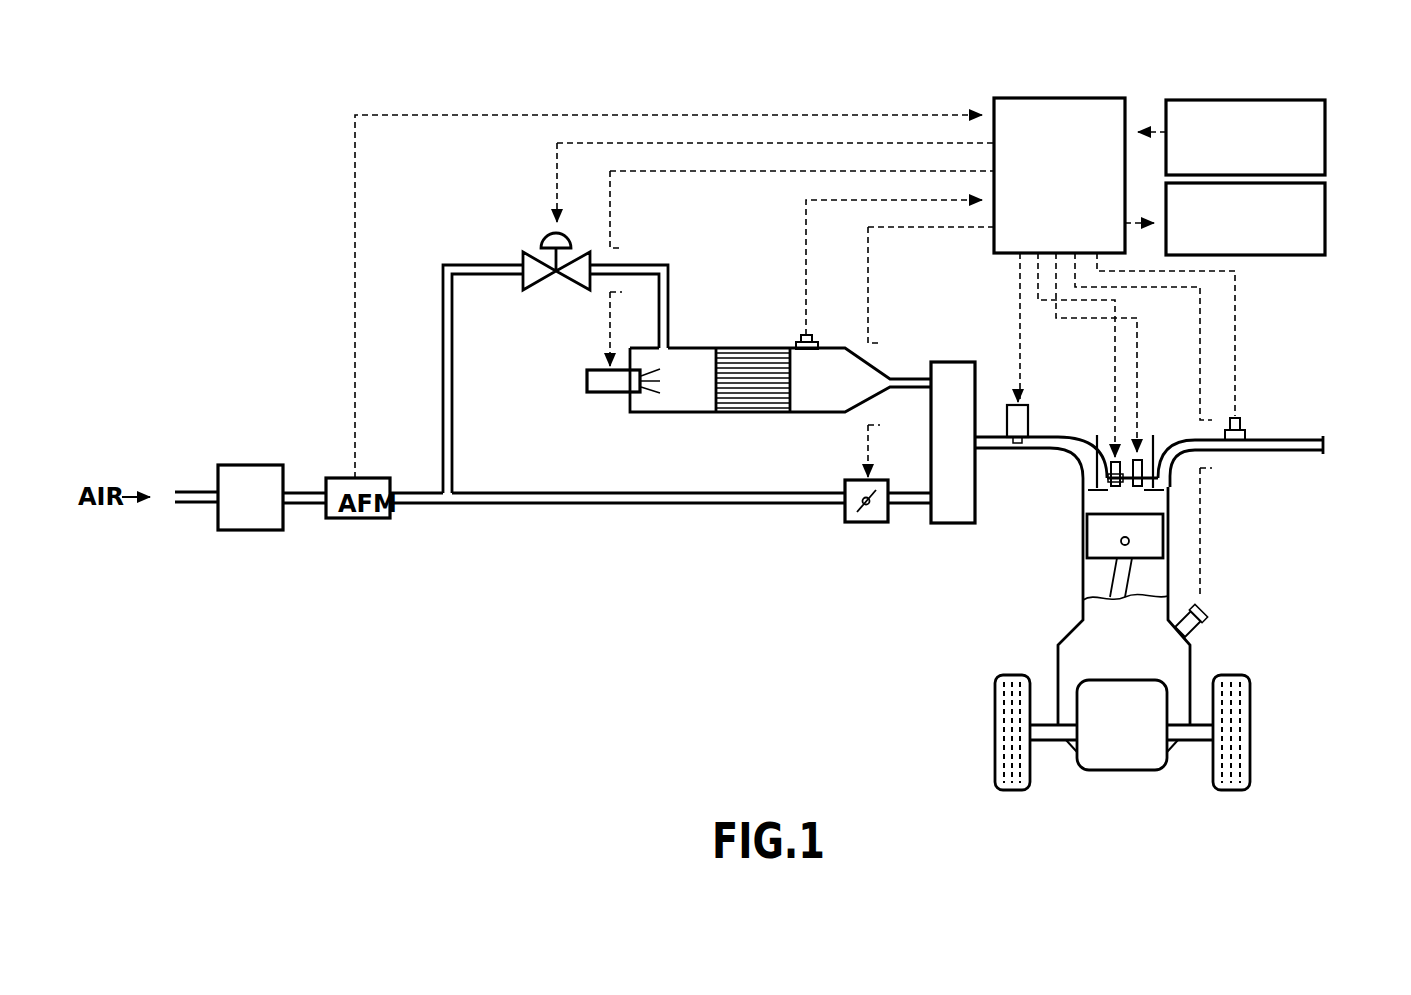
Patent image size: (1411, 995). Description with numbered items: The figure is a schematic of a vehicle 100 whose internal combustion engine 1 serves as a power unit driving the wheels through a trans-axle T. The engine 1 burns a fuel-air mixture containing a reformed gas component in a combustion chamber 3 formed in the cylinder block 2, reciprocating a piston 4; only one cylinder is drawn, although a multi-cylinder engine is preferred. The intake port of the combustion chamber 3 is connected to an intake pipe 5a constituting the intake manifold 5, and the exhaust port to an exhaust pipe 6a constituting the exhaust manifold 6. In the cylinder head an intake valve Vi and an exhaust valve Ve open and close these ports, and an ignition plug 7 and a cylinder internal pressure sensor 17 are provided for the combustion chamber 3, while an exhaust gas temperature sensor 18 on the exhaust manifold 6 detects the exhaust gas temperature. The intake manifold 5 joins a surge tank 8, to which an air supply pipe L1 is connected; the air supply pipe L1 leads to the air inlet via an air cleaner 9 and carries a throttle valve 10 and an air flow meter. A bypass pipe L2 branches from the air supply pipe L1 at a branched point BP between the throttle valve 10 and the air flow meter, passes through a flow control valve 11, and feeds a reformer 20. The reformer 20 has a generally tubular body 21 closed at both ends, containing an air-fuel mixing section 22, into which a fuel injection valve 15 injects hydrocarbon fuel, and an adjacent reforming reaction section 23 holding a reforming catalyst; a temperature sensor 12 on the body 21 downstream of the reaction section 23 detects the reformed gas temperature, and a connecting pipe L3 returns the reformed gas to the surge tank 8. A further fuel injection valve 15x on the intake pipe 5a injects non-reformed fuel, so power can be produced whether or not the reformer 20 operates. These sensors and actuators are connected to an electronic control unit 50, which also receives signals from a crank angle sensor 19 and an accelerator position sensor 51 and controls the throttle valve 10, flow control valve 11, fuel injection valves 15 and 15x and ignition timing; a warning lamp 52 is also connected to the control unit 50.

The internal combustion engine 1 is at (1103, 592).
The cylinder block 2 is at (1078, 618).
The combustion chamber 3 is at (1092, 502).
The piston 4 is at (1086, 536).
The intake manifold 5 is at (1043, 428).
The intake pipe 5a is at (990, 452).
The exhaust manifold 6 is at (1220, 460).
The exhaust pipe 6a is at (1283, 438).
The ignition plug 7 is at (1116, 456).
The surge tank 8 is at (950, 525).
The air cleaner 9 is at (250, 532).
The throttle valve 10 is at (865, 525).
The flow control valve 11 is at (562, 232).
The temperature sensor 12 is at (815, 330).
The fuel injection valve 15 is at (605, 395).
The fuel injection valve 15x is at (1012, 403).
The cylinder internal pressure sensor 17 is at (1139, 452).
The exhaust gas temperature sensor 18 is at (1241, 426).
The crank angle sensor 19 is at (1206, 614).
The reformer 20 is at (780, 360).
The body 21 is at (818, 416).
The air-fuel mixing section 22 is at (670, 408).
The reforming reaction section 23 is at (752, 418).
The electronic control unit 50 is at (1068, 96).
The accelerator position sensor 51 is at (1326, 120).
The warning lamp 52 is at (1326, 226).
The vehicle 100 is at (705, 612).
The air supply pipe L1 is at (635, 505).
The bypass pipe L2 is at (483, 262).
The connecting pipe L3 is at (912, 372).
The branched point BP is at (462, 486).
The intake valve Vi is at (1097, 434).
The exhaust valve Ve is at (1156, 432).
The trans-axle T is at (1120, 765).